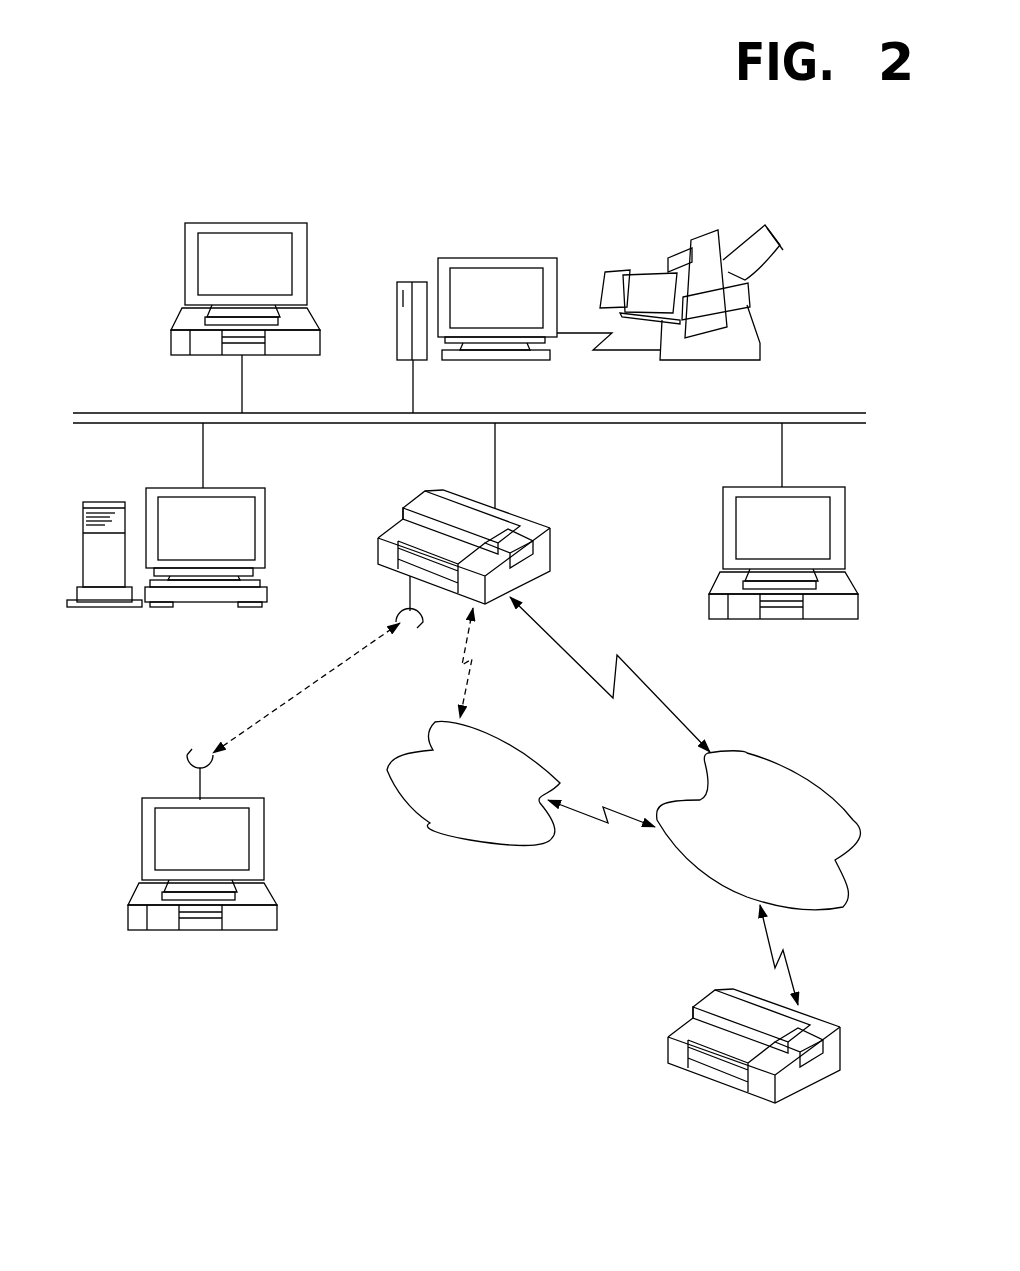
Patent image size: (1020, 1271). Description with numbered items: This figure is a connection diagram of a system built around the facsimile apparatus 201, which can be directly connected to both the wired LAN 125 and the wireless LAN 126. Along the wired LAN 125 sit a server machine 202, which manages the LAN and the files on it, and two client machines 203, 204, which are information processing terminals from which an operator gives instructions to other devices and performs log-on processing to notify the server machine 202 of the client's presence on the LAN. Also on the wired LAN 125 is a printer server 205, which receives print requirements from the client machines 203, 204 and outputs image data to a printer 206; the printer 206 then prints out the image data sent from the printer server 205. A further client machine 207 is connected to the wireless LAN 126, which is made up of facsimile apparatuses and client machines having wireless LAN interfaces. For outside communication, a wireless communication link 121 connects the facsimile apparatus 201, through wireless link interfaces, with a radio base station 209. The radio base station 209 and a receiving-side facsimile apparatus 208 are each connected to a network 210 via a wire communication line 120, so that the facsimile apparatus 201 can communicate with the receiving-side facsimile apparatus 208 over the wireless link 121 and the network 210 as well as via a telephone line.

The wire communication line 120 is at (650, 685).
The wireless communication link 121 is at (470, 690).
The wired LAN 125 is at (610, 414).
The wireless LAN 126 is at (277, 708).
The facsimile apparatus 201 is at (527, 520).
The server machine 202 is at (183, 613).
The client machine 203 is at (208, 223).
The client machine 204 is at (722, 620).
The printer server 205 is at (468, 257).
The printer 206 is at (707, 232).
The client machine 207 is at (165, 932).
The receiving-side facsimile apparatus 208 is at (720, 1082).
The radio base station 209 is at (430, 823).
The network 210 is at (783, 765).